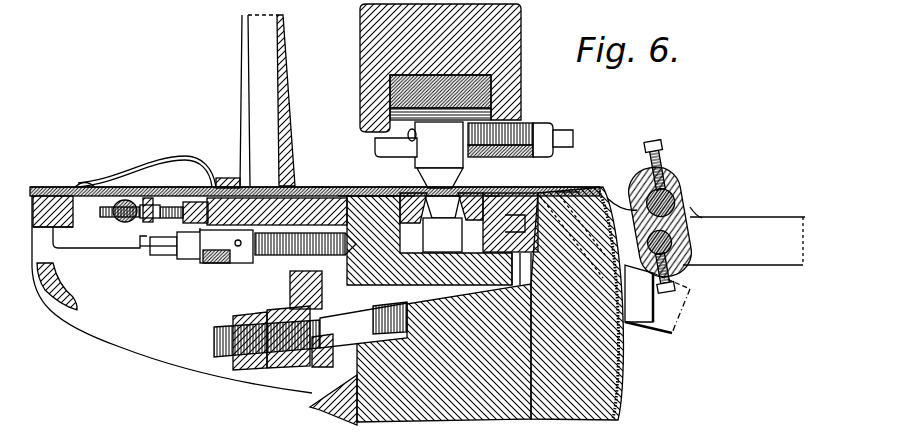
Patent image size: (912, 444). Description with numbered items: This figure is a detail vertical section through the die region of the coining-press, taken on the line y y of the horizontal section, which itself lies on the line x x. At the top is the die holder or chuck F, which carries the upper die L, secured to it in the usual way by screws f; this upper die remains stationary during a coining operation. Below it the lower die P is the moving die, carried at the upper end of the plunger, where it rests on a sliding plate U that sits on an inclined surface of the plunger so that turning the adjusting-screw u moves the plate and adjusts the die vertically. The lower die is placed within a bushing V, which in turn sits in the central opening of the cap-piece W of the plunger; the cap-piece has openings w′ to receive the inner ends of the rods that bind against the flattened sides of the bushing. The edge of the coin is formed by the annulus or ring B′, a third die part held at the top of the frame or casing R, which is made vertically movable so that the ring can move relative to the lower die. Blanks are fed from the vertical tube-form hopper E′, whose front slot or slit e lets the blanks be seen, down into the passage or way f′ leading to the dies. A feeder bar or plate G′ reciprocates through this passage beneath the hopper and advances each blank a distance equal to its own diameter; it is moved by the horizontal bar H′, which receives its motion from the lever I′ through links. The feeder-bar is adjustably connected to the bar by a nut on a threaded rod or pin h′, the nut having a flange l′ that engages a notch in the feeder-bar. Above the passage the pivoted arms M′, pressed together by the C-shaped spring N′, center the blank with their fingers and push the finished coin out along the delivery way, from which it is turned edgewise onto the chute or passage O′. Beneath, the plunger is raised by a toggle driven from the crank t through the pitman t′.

The die holder or chuck F is at (506, 32).
The upper die L is at (439, 145).
The screws f is at (400, 146).
The vertical tube-form hopper E′ is at (270, 61).
The slot or slit e is at (246, 80).
The lower die P is at (442, 235).
The base block Q′ is at (462, 412).
The adjusting-screw u is at (214, 346).
The sliding plate U is at (290, 285).
The horizontal bar H′ is at (168, 252).
The section line y y is at (212, 261).
The section line x x is at (148, 248).
The openings w′ is at (305, 254).
The feeder bar or plate G′ is at (130, 210).
The threaded rod or pin h′ is at (98, 218).
The crank t is at (112, 218).
The flange l′ is at (128, 220).
The pitman t′ is at (142, 222).
The passage or way f′ is at (318, 188).
The C-shaped spring N′ is at (341, 194).
The arms M′ is at (365, 195).
The annulus or ring B′ is at (390, 200).
The bushing V is at (412, 215).
The cap-piece W is at (497, 212).
The slides S′ is at (519, 214).
The frame or casing R is at (617, 198).
The lever I′ is at (744, 241).
The chute or passage O′ is at (665, 299).